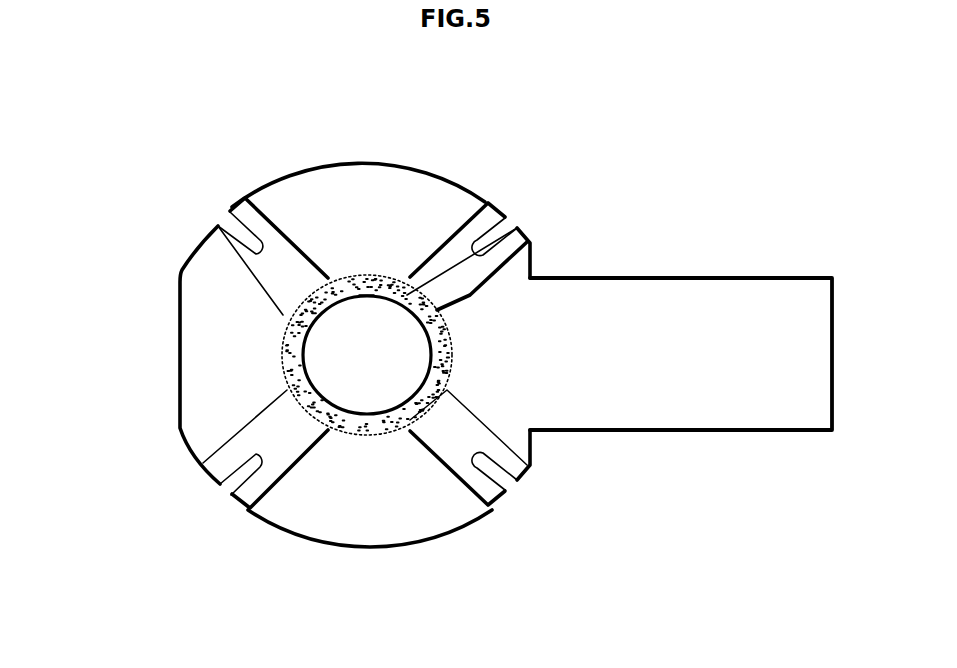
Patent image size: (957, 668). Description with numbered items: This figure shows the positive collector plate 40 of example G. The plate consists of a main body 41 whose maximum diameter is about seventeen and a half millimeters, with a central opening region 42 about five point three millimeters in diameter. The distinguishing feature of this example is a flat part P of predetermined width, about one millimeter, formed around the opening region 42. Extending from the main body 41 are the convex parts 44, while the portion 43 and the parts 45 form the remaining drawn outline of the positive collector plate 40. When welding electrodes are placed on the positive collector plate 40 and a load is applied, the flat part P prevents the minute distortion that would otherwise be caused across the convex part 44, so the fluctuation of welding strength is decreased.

The positive collector plate 40 is at (336, 161).
The main body 41 is at (190, 337).
The opening region 42 is at (325, 353).
The extension portion 43 is at (730, 289).
The convex part 44 is at (238, 262).
The arc-shaped portion 45 is at (513, 207).